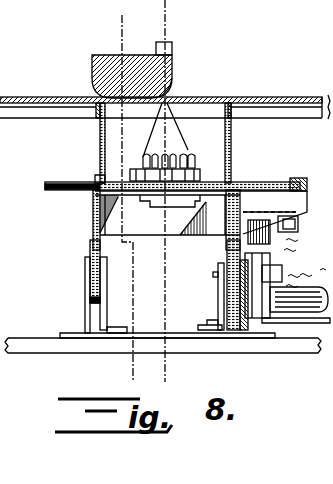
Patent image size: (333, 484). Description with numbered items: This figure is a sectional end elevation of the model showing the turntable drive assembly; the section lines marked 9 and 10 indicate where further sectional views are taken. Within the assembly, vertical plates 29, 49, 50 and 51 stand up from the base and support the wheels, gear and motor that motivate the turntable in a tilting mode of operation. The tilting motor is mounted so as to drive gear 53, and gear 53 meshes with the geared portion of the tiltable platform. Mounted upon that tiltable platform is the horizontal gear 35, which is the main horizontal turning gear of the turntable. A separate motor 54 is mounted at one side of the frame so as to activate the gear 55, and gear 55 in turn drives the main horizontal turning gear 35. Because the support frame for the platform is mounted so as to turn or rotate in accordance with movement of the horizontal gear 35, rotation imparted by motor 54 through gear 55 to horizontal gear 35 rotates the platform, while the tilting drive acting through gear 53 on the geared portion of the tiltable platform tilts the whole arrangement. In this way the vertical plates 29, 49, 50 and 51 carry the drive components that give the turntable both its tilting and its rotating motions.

The section line 9- 9 is at (133, 37).
The section line 10- 10 is at (152, 28).
The vertical plate 29 is at (247, 327).
The horizontal gear 35 is at (46, 186).
The vertical plate 49 is at (218, 313).
The vertical plate 50 is at (106, 300).
The vertical plate 51 is at (88, 312).
The gear 53 is at (236, 340).
The motor 54 is at (292, 236).
The gear 55 is at (298, 187).